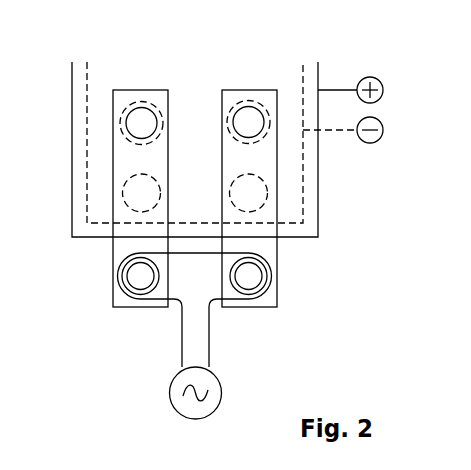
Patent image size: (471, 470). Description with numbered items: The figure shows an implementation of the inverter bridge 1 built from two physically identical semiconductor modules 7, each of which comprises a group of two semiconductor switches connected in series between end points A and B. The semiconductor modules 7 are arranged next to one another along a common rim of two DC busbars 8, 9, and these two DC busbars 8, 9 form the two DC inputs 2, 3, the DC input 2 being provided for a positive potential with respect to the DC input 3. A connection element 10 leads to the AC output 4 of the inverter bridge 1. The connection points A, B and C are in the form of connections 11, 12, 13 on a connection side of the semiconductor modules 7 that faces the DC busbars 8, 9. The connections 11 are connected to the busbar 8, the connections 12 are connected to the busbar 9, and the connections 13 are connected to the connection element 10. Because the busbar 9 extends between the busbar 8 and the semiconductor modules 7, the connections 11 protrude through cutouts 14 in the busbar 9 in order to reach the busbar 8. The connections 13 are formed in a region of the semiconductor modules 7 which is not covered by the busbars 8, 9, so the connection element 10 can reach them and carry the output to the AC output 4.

The inverter bridge 1 is at (286, 283).
The DC input 2 is at (345, 81).
The DC input 3 is at (345, 140).
The AC output 4 is at (222, 398).
The semiconductor module 7 is at (108, 313).
The DC busbar 8 is at (318, 228).
The DC busbar 9 is at (312, 185).
The connection element 10 is at (182, 336).
The connection 11 is at (128, 139).
The connection 12 is at (125, 200).
The connection 13 is at (127, 277).
The cutout 14 is at (120, 123).